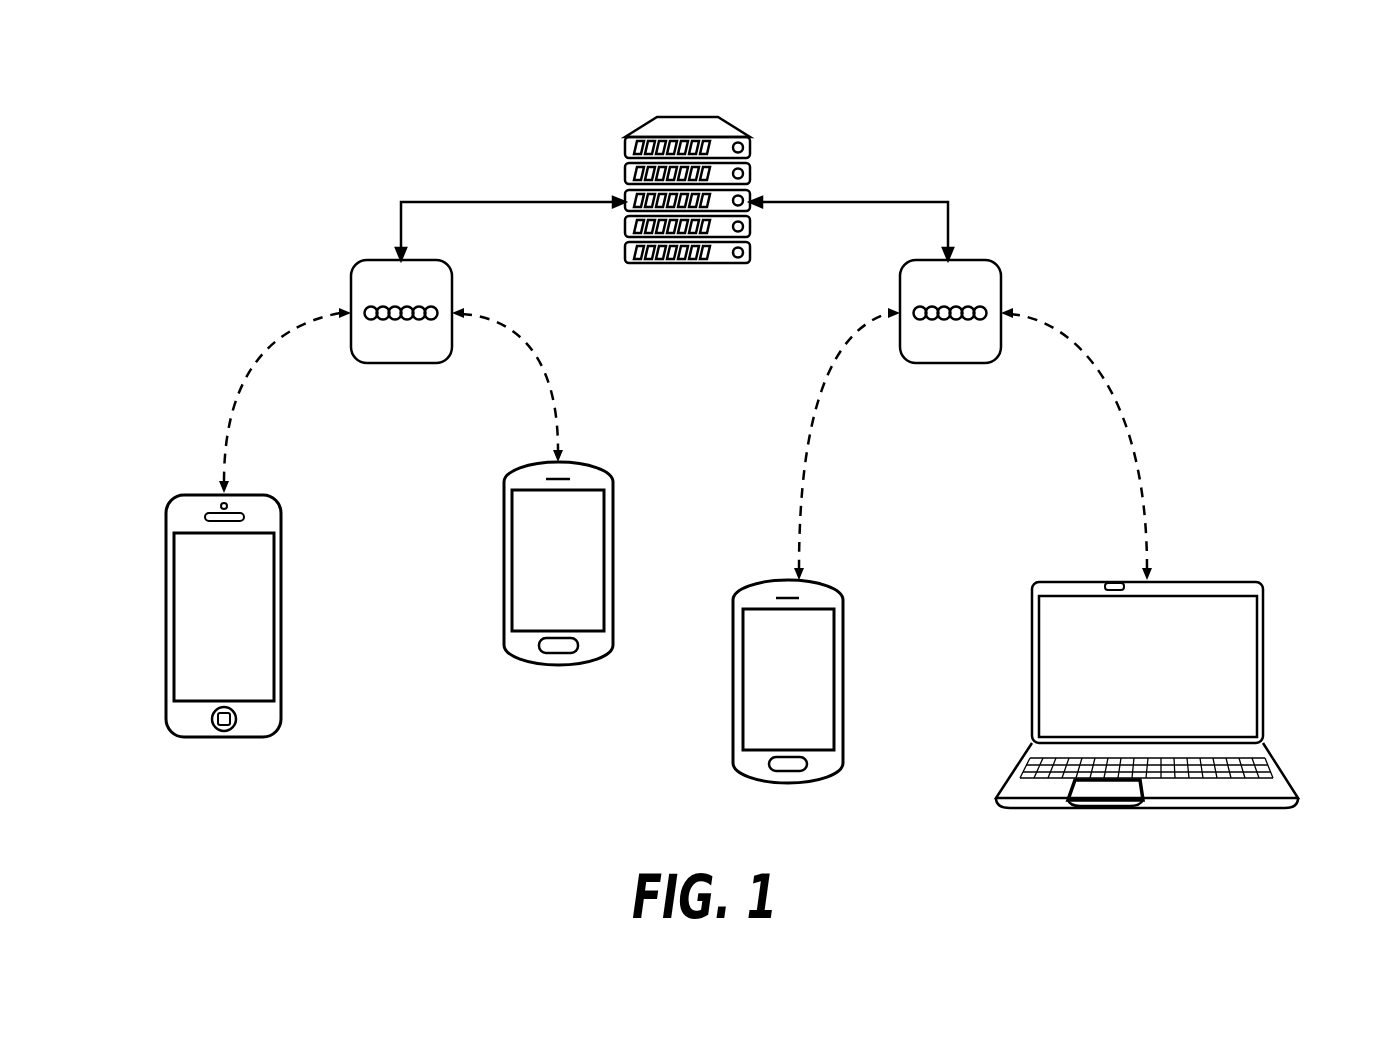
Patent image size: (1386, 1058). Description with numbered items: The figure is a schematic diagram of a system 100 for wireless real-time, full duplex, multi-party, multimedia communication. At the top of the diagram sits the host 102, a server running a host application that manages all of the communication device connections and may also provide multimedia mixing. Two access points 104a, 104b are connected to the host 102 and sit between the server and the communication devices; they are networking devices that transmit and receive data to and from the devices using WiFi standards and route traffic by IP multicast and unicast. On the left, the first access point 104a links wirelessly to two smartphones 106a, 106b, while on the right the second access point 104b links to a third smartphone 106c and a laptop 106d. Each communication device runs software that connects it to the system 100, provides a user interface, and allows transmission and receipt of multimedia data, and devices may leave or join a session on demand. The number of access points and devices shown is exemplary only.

The system 100 is at (316, 146).
The host 102 is at (735, 130).
The access point 104a is at (352, 262).
The access point 104b is at (970, 260).
The communication device 106a is at (166, 590).
The communication device 106b is at (504, 596).
The communication device 106c is at (733, 688).
The communication device 106d is at (1263, 673).